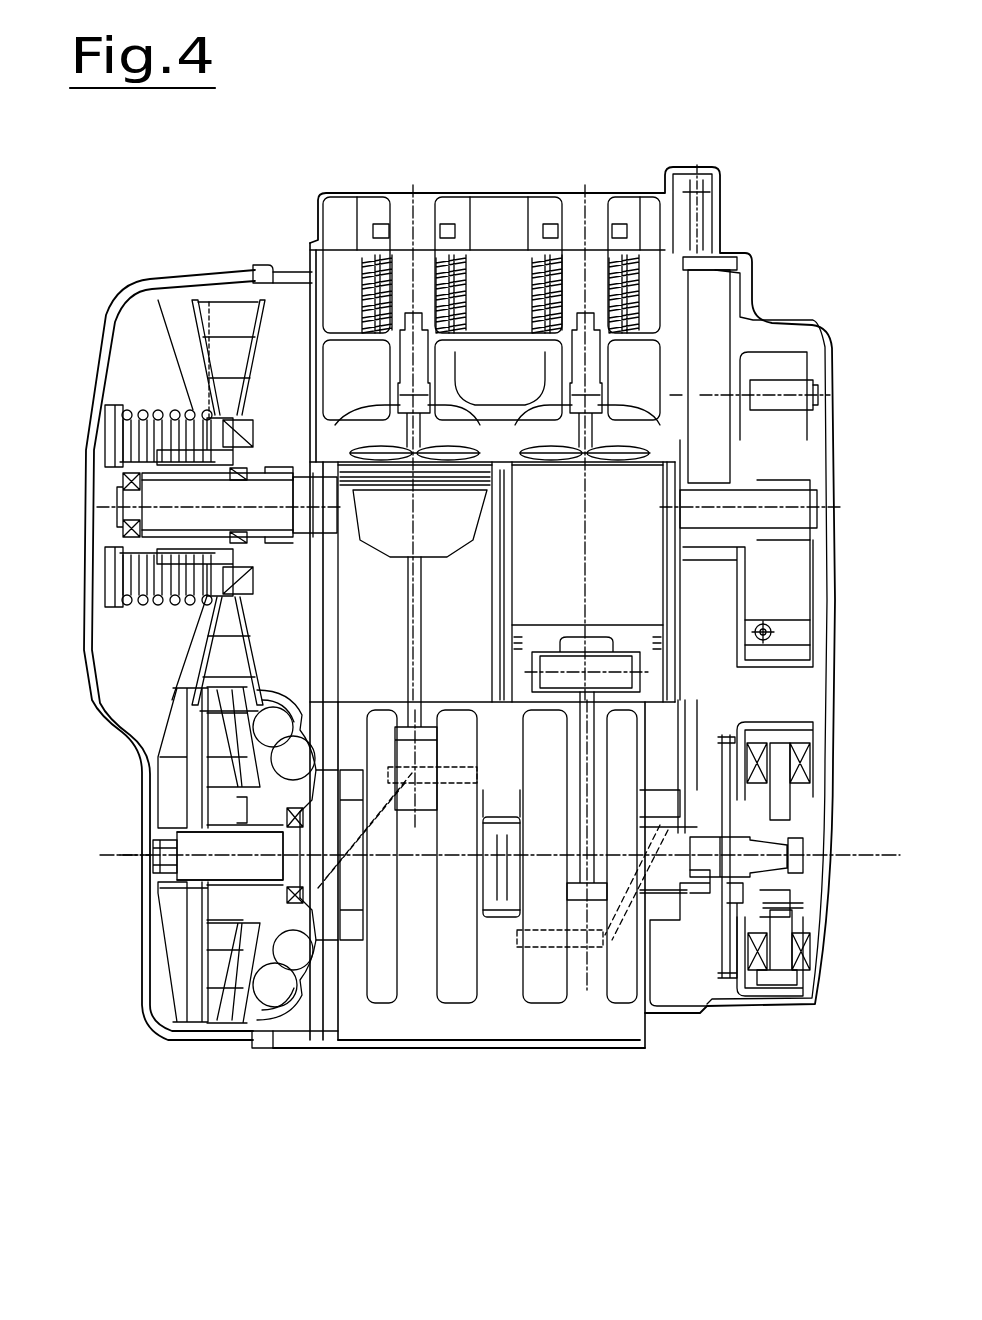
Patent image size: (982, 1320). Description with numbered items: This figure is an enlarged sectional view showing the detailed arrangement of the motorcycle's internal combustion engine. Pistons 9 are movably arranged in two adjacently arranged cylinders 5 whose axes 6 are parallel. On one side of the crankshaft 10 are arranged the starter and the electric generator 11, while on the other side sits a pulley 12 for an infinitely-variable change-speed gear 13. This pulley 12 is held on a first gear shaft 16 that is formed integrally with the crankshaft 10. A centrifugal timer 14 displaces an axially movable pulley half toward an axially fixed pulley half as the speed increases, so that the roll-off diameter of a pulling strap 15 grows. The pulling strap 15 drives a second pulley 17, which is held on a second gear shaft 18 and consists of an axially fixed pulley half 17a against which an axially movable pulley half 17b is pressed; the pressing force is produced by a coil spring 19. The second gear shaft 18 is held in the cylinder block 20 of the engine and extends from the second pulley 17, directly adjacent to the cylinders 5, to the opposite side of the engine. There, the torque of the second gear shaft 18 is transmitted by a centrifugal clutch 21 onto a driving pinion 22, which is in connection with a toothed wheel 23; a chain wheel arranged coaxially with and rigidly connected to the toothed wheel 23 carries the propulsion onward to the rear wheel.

The cylinders 5 is at (467, 619).
The axes 6 is at (413, 623).
The pistons 9 is at (455, 520).
The crankshaft 10 is at (503, 873).
The electric generator 11 is at (803, 760).
The pulley 12 is at (197, 903).
The infinitely-variable change-speed gear 13 is at (148, 794).
The centrifugal timer 14 is at (300, 958).
The pulling strap 15 is at (227, 318).
The first gear shaft 16 is at (217, 856).
The second pulley 17 is at (223, 365).
The axially fixed pulley half 17a is at (253, 327).
The axially movable pulley half 17b is at (203, 328).
The second gear shaft 18 is at (157, 508).
The coil spring 19 is at (158, 410).
The cylinder block 20 is at (673, 625).
The centrifugal clutch 21 is at (795, 397).
The driving pinion 22 is at (708, 545).
The toothed wheel 23 is at (710, 317).